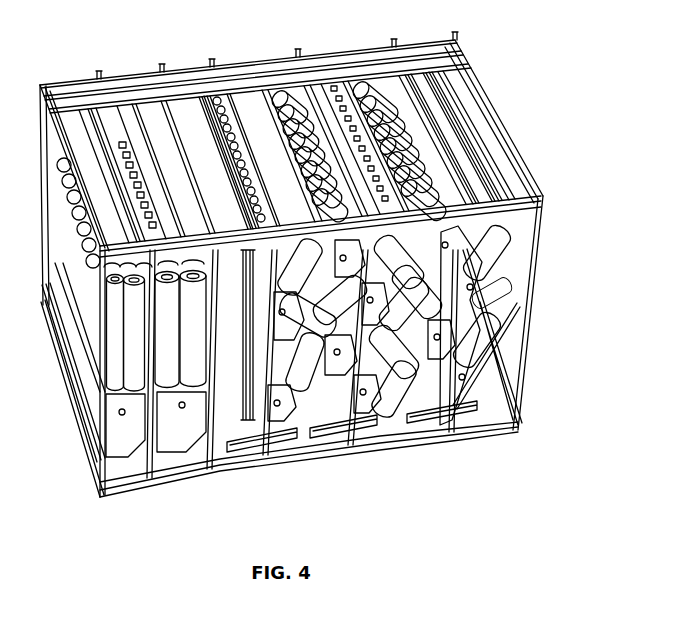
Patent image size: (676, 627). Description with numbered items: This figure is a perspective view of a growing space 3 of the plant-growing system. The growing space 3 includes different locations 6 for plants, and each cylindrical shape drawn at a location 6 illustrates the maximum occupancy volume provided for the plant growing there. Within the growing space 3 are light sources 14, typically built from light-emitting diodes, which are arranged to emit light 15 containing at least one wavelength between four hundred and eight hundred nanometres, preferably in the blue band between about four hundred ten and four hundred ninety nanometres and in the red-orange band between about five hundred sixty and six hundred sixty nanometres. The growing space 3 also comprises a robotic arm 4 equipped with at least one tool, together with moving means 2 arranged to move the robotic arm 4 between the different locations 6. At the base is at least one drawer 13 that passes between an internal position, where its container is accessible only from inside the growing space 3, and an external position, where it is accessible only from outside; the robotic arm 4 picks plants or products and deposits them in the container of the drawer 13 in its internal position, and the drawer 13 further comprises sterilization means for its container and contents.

The moving means 2 is at (200, 88).
The growing space 3 is at (524, 141).
The robotic arm 4 is at (202, 437).
The location 6 is at (490, 260).
The drawer 13 is at (313, 443).
The light source 14 is at (143, 113).
The light 15 is at (127, 118).